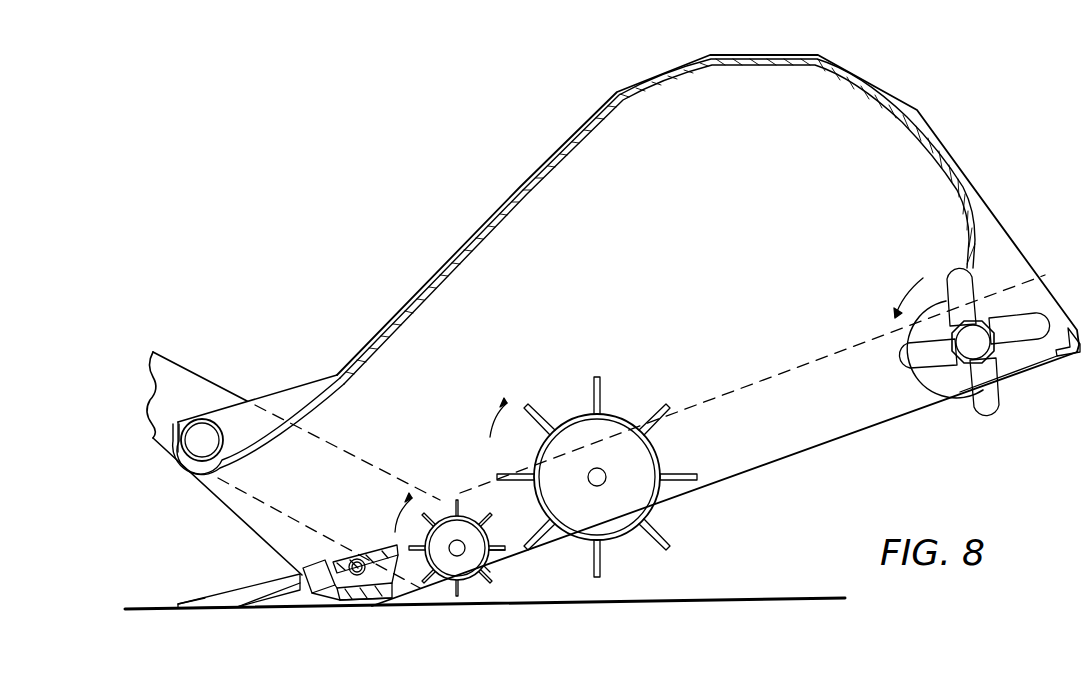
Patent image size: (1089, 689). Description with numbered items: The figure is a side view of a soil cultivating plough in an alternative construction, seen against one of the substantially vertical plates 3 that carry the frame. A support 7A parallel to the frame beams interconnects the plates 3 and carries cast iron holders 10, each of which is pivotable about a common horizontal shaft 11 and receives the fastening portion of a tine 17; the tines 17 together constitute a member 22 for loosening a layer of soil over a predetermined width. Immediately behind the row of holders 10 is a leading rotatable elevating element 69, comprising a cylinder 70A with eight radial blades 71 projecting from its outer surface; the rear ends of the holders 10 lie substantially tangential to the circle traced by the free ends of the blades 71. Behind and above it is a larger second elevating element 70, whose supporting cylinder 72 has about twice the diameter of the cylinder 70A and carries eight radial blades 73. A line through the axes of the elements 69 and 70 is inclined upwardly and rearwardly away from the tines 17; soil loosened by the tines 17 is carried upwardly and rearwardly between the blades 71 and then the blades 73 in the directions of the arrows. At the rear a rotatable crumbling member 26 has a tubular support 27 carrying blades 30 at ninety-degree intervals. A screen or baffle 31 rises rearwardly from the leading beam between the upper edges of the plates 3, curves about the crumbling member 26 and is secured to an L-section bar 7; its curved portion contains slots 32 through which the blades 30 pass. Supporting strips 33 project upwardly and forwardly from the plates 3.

The vertical plate 3 is at (587, 147).
The bar 7 is at (1076, 355).
The support 7A is at (368, 599).
The holder 10 is at (322, 566).
The shaft 11 is at (198, 422).
The tine 17 is at (257, 597).
The member for loosening a layer of soil 22 is at (197, 602).
The rotatable crumbling member 26 is at (958, 361).
The tubular support 27 is at (631, 431).
The blade 30 is at (967, 276).
The screen or baffle 31 is at (673, 58).
The slot 32 is at (1020, 377).
The supporting strip 33 is at (167, 371).
The leading rotatable elevating element 69 is at (438, 514).
The second rearward elevating element 70 is at (618, 415).
The cylinder 70A is at (495, 540).
The radial blade 71 is at (490, 572).
The supporting cylinder 72 is at (657, 462).
The radial blade 73 is at (663, 533).